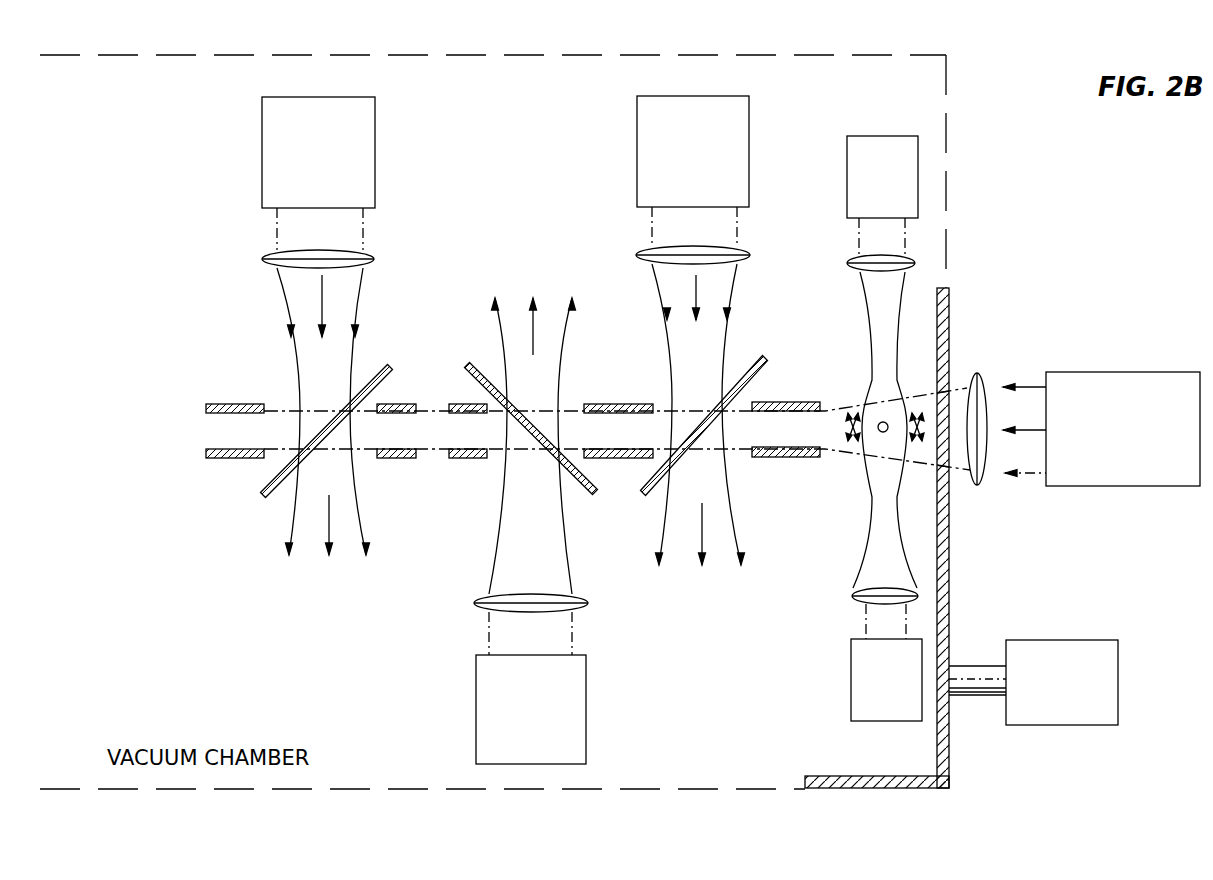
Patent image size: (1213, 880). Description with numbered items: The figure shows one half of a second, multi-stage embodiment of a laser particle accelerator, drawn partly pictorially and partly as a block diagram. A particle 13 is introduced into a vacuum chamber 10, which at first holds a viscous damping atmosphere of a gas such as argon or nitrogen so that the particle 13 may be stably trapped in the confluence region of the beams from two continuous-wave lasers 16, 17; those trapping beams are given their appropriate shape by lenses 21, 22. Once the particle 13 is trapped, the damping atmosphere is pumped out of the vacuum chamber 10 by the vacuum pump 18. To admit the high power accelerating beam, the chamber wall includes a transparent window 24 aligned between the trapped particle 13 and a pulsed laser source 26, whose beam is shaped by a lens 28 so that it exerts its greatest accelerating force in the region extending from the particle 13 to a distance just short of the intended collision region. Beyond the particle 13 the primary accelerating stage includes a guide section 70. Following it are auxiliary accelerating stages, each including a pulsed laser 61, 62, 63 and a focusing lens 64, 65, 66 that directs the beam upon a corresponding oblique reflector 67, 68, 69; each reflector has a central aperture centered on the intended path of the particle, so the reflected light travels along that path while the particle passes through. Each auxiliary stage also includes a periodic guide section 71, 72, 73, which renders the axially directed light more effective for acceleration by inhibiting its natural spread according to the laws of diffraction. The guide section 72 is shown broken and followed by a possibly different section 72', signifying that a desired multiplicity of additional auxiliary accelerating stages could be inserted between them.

The vacuum chamber 10 is at (950, 583).
The particle 13 is at (881, 421).
The laser 16 is at (889, 721).
The laser 17 is at (847, 172).
The vacuum pump 18 is at (1060, 725).
The lens 21 is at (850, 262).
The lens 22 is at (860, 595).
The transparent window 24 is at (950, 470).
The pulsed laser source 26 is at (1108, 372).
The lens 28 is at (977, 372).
The pulsed laser 61 is at (637, 151).
The pulsed laser 62 is at (262, 152).
The pulsed laser 63 is at (586, 708).
The focusing lens 64 is at (640, 254).
The focusing lens 65 is at (265, 258).
The focusing lens 66 is at (476, 603).
The oblique reflector 67 is at (748, 368).
The oblique reflector 68 is at (480, 372).
The oblique reflector 69 is at (378, 372).
The guide section 70 is at (788, 458).
The periodic guide section 71 is at (617, 403).
The periodic guide section 72 is at (468, 454).
The guide section 72' is at (399, 457).
The periodic guide section 73 is at (227, 403).